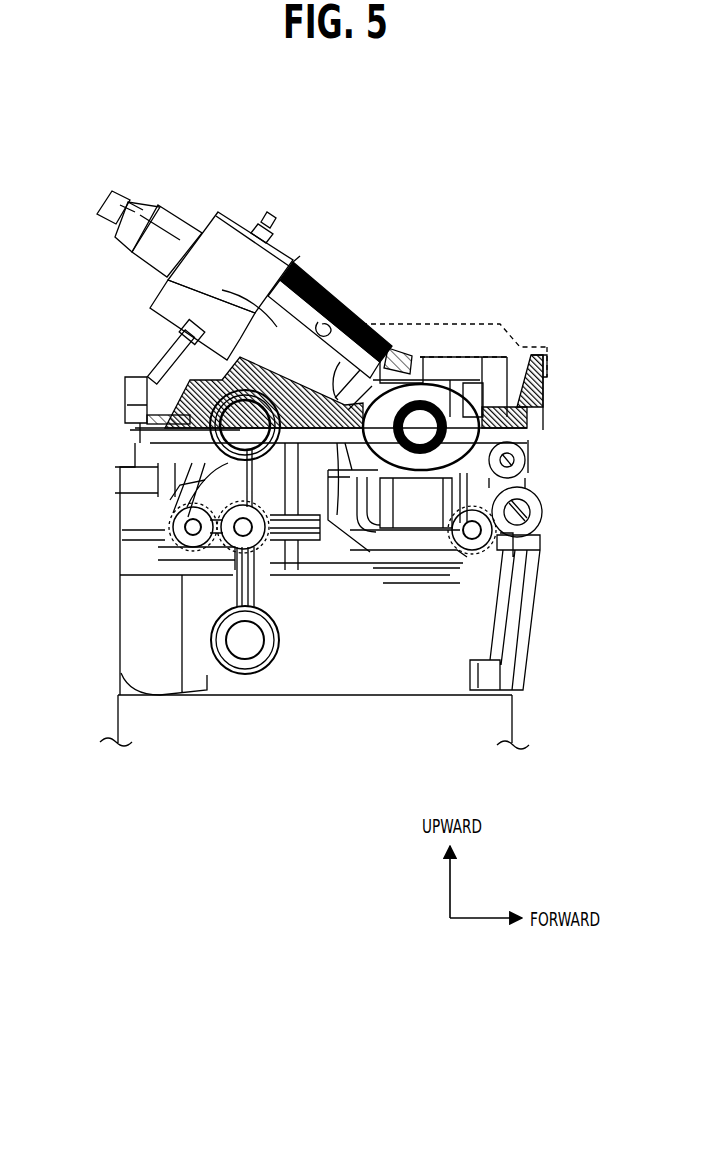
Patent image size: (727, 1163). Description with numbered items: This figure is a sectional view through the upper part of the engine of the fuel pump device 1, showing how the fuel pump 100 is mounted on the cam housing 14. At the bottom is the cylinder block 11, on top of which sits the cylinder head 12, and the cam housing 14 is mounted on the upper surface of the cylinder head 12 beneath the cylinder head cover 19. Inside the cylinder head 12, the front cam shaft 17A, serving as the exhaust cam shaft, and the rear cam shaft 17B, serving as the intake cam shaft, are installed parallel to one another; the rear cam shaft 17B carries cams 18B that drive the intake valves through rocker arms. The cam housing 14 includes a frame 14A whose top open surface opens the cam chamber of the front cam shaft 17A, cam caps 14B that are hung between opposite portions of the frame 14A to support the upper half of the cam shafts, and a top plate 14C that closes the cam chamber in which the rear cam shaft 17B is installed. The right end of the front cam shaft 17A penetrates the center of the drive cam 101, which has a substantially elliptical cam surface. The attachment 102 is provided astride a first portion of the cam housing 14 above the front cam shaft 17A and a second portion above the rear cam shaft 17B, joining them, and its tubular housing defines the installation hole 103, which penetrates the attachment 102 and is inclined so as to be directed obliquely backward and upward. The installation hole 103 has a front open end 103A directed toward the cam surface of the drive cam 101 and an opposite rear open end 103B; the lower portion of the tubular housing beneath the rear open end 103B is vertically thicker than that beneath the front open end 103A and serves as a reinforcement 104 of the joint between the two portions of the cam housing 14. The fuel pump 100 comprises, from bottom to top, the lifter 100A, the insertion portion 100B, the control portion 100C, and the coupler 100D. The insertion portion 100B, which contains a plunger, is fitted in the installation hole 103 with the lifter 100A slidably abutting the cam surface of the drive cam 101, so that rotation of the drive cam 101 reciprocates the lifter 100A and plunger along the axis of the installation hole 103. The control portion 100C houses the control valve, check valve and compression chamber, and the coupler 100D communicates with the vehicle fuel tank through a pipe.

The fuel pump device 1 is at (330, 192).
The cylinder block 11 is at (516, 720).
The cylinder head 12 is at (540, 610).
The cam housing 14 is at (538, 397).
The frame 14A is at (547, 361).
The cam caps 14B is at (468, 388).
The top plate 14C is at (147, 346).
The front cam shaft 17A is at (425, 427).
The rear cam shaft 17B is at (243, 425).
The cams 18B is at (158, 490).
The cylinder head cover 19 is at (477, 325).
The fuel pump 100 is at (264, 271).
The lifter 100A is at (368, 372).
The insertion portion 100B is at (168, 288).
The control portion 100C is at (222, 248).
The coupler 100D is at (180, 200).
The drive cam 101 is at (524, 472).
The attachment 102 is at (318, 281).
The installation hole 103 is at (326, 322).
The front open end 103A is at (392, 348).
The rear open end 103B is at (301, 270).
The reinforcement 104 is at (333, 530).